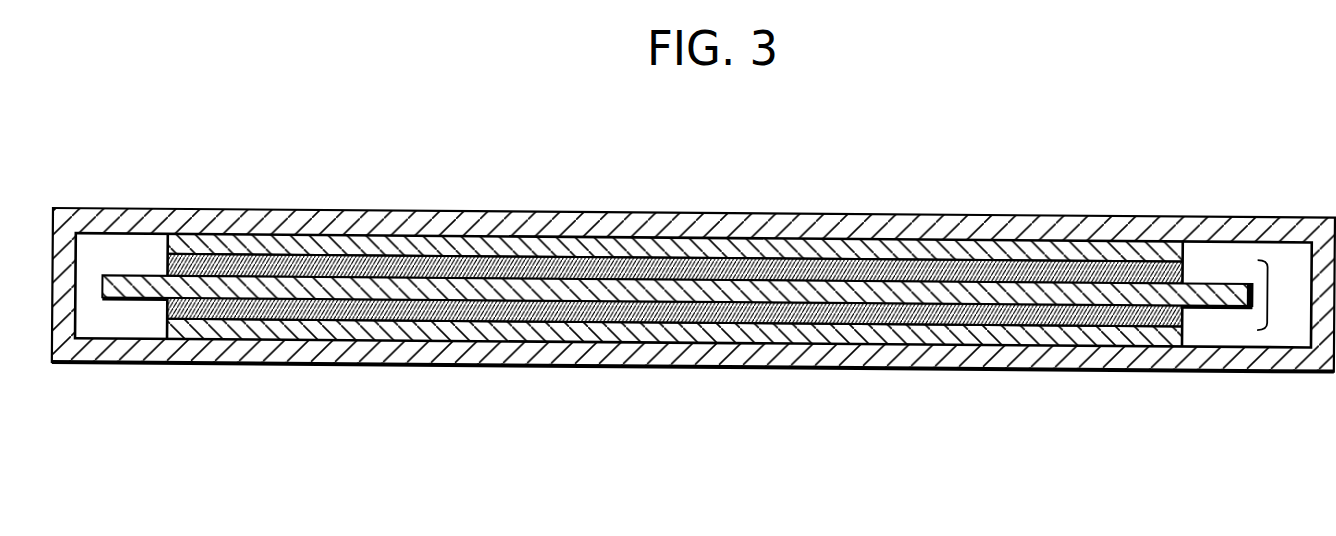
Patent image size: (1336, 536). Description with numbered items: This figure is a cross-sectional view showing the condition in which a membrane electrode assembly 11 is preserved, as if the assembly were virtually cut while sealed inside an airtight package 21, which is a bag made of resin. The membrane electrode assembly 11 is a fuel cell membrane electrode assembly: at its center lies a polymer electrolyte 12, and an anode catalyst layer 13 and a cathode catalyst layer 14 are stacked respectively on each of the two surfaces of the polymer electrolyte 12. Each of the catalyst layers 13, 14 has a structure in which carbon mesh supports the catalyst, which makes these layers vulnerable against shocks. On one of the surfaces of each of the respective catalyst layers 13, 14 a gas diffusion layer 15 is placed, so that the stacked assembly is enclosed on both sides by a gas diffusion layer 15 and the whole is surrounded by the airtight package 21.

The membrane electrode assembly 11 is at (1272, 297).
The polymer electrolyte 12 is at (140, 280).
The anode catalyst layer 13 is at (265, 265).
The cathode catalyst layer 14 is at (262, 310).
The gas diffusion layer 15 is at (650, 330).
The airtight package 21 is at (404, 222).